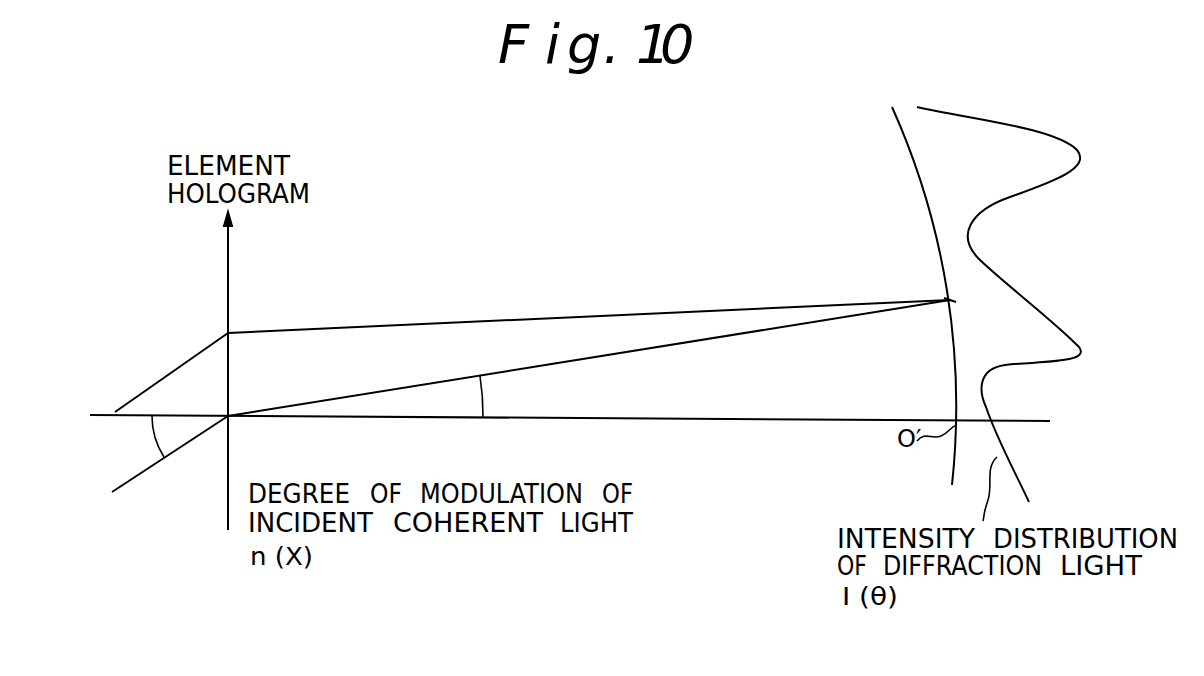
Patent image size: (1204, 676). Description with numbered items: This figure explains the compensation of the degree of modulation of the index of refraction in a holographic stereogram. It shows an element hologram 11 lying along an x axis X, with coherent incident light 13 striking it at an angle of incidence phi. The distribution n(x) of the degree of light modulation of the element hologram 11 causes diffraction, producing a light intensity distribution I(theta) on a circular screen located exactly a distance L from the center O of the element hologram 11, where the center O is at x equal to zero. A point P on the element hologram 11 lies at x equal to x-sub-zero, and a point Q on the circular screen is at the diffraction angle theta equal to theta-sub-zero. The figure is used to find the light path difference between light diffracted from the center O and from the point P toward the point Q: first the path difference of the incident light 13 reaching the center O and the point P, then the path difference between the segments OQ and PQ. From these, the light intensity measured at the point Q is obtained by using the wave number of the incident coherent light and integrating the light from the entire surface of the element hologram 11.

The element hologram 11 is at (226, 290).
The incident light 13 is at (170, 373).
The point P is at (230, 332).
The center point O is at (230, 419).
The point Q is at (959, 300).
The distance L is at (658, 397).
The x axis X is at (238, 224).